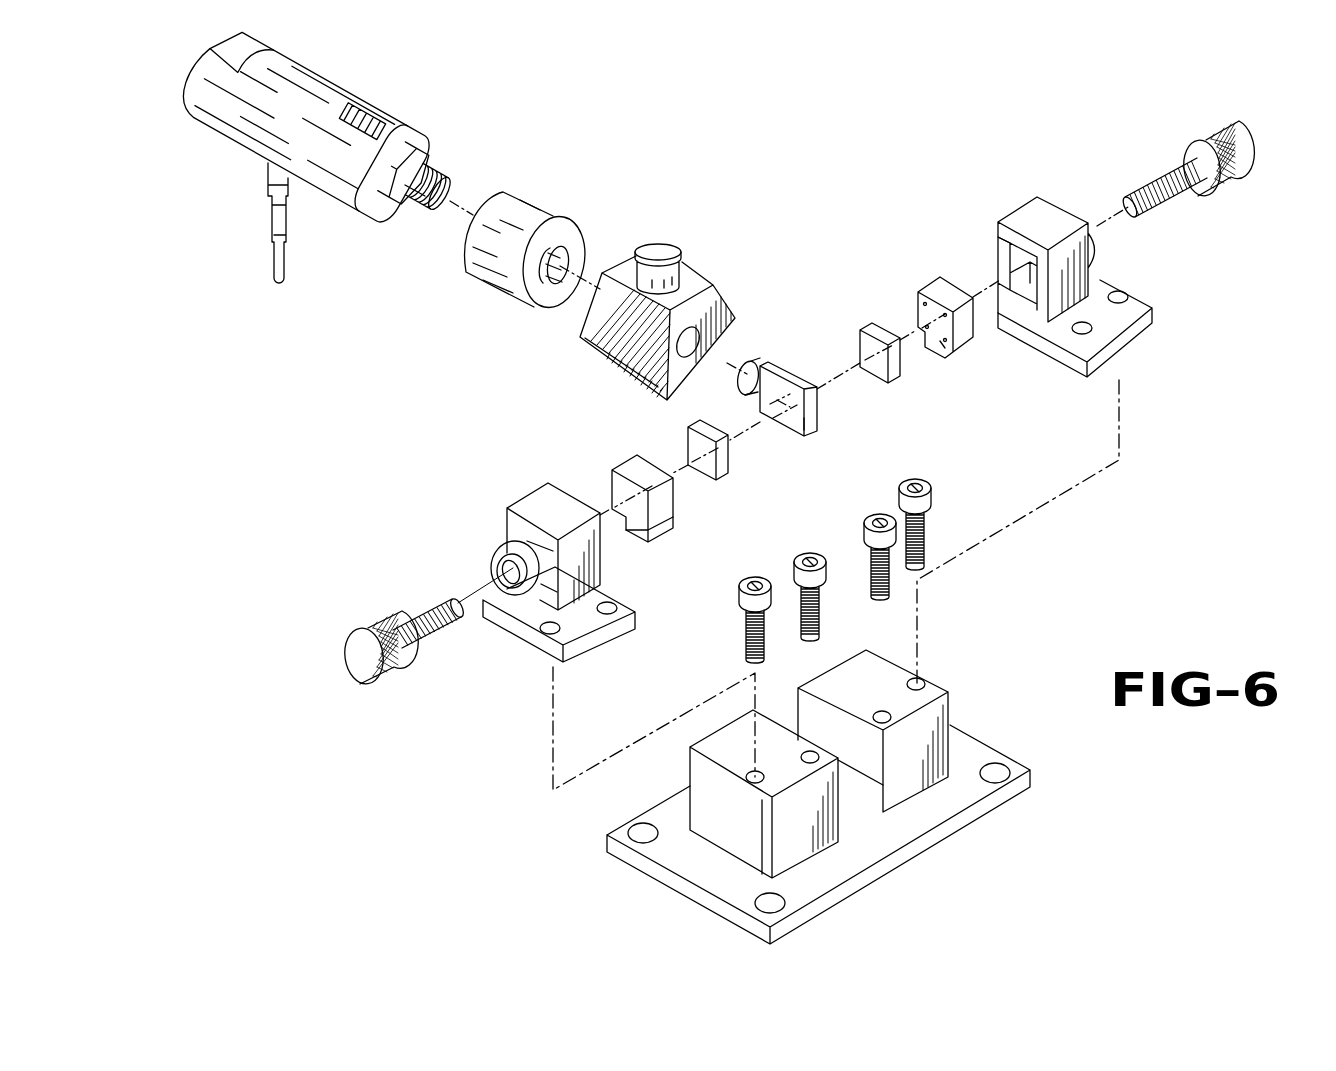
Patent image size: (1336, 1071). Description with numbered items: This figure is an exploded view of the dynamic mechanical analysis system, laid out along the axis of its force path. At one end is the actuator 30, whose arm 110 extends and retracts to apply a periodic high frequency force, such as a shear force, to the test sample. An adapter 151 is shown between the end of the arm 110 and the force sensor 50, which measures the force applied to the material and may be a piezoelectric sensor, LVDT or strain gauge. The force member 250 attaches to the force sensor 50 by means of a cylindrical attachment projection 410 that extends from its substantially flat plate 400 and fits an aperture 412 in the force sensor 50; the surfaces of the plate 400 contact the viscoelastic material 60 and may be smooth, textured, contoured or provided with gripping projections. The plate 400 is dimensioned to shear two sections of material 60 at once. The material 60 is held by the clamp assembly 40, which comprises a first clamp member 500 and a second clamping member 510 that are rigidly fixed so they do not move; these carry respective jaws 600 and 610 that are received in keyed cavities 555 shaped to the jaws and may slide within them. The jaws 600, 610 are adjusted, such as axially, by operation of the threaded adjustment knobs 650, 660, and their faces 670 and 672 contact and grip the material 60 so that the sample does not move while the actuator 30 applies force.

The actuator 30 is at (366, 90).
The arm 110 is at (407, 198).
The adapter 151 is at (537, 218).
The force sensor 50 is at (655, 252).
The aperture 412 is at (692, 338).
The cylindrical attachment projection 410 is at (750, 372).
The flat plate 400 is at (780, 400).
The force member 250 is at (813, 422).
The viscoelastic material 60 is at (893, 367).
The jaw 610 is at (932, 288).
The face 672 is at (943, 338).
The clamp assembly 40 is at (1020, 188).
The keyed cavity 555 is at (1009, 267).
The threaded adjustment knob 660 is at (1230, 138).
The threaded adjustment knob 650 is at (357, 656).
The jaw 600 is at (630, 465).
The face 670 is at (675, 512).
The first clamp member 500 is at (515, 645).
The second clamping member 510 is at (1130, 325).